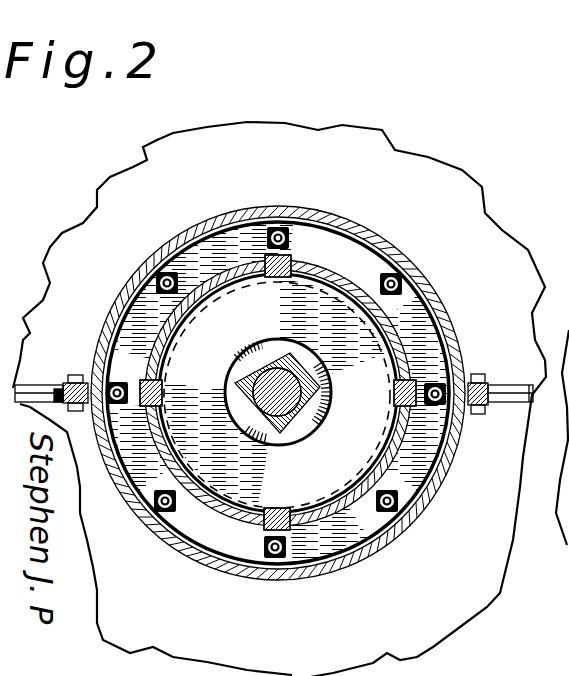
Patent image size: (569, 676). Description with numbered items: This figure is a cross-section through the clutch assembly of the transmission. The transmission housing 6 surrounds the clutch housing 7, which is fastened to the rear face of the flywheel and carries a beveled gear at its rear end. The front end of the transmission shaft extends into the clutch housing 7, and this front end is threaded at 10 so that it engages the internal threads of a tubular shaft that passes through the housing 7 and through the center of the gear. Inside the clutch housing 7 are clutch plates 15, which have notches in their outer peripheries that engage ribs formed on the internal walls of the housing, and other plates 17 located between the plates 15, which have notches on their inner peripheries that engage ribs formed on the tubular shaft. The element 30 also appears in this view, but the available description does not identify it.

The transmission housing 6 is at (425, 279).
The clutch housing 7 is at (337, 275).
The threads 10 is at (266, 432).
The clutch plates 15 is at (378, 473).
The plates 17 is at (252, 434).
The hub 30 is at (278, 442).